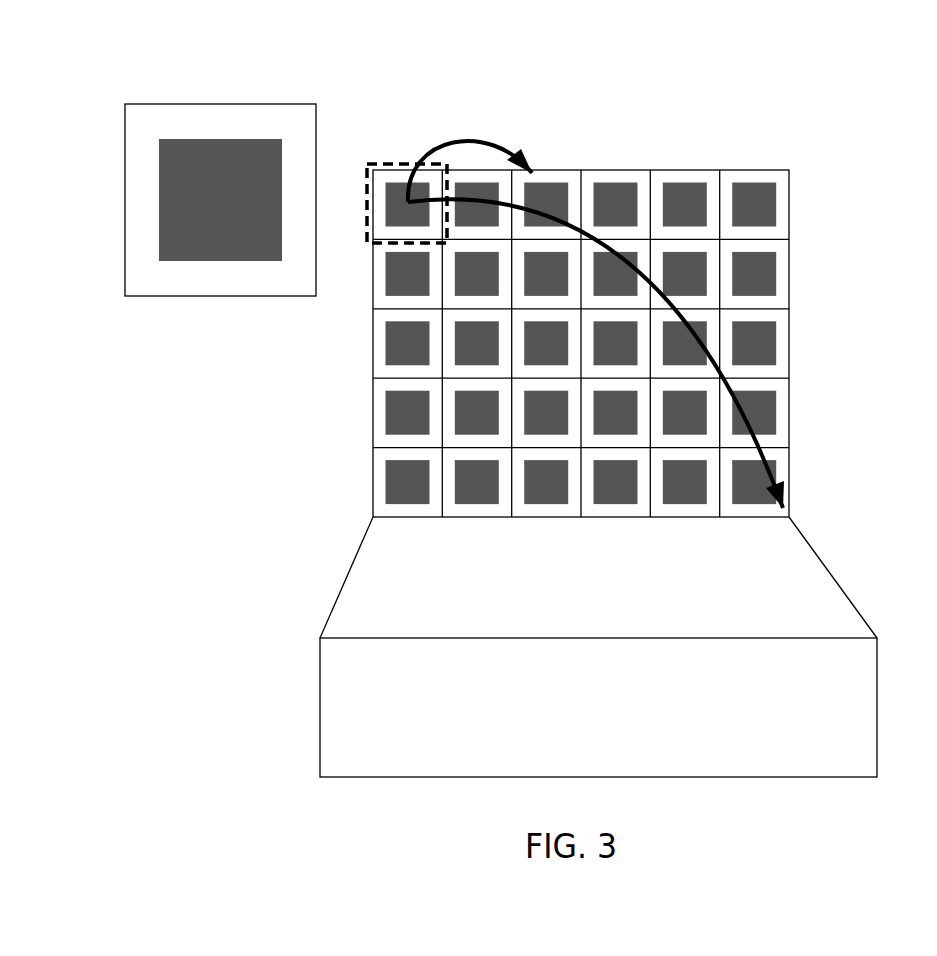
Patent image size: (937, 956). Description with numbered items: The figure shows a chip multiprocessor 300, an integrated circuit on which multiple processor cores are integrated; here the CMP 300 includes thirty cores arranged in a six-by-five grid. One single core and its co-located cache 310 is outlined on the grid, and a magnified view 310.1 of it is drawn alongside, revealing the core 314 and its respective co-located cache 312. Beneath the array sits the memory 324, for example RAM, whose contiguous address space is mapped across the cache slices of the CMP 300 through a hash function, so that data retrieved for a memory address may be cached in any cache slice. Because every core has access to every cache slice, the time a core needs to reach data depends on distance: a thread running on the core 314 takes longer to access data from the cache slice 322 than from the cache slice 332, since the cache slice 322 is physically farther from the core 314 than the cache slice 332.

The chip multiprocessor 300 is at (817, 153).
The single core and its co-located cache 310 is at (388, 163).
The magnified view 310.1 is at (238, 183).
The co-located cache 312 is at (146, 126).
The core 314 is at (233, 148).
The cache slice 322 is at (755, 510).
The memory 324 is at (598, 647).
The cache slice 332 is at (546, 177).